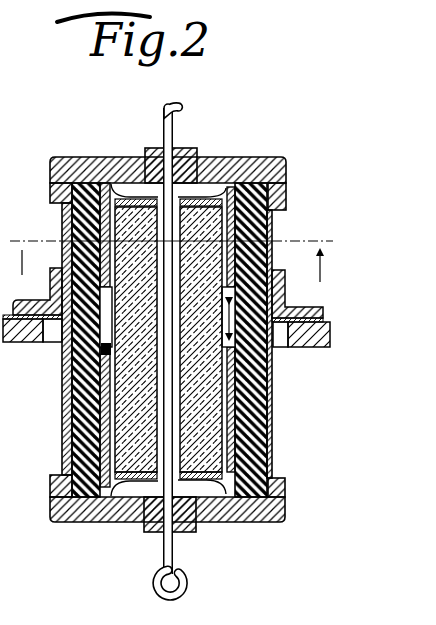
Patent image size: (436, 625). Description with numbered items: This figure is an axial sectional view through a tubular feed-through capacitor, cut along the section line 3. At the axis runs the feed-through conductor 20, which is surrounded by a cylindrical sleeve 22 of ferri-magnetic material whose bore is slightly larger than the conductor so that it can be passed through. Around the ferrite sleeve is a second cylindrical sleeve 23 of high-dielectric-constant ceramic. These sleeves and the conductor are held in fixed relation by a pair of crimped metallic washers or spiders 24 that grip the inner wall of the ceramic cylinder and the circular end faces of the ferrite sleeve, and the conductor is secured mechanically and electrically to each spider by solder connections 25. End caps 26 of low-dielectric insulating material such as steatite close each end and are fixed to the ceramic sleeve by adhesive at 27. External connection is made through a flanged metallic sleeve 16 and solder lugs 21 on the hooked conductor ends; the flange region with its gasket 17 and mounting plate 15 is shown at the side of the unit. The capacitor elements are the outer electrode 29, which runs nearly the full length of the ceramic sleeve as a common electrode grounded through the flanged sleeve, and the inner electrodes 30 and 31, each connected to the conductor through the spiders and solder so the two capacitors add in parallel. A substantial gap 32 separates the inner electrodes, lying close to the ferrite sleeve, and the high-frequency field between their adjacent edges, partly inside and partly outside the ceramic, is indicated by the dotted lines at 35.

The mounting plate 15 is at (331, 348).
The flanged metallic sleeve 16 is at (313, 291).
The gasket 17 is at (326, 319).
The feed-through conductor 20 is at (172, 145).
The solder lugs 21 is at (186, 95).
The cylindrical sleeve of ferri-magnetic material 22 is at (203, 405).
The ceramic cylindrical sleeve 23 is at (62, 222).
The crimped metallic washers or spiders 24 is at (224, 158).
The solder connections 25 is at (134, 183).
The end caps 26 is at (95, 156).
The adhesive fixing 27 is at (286, 190).
The outer electrode 29 is at (62, 413).
The inner electrode 30 is at (228, 446).
The inner electrode 31 is at (259, 158).
The gap 32 is at (273, 361).
The electrical field 35 is at (110, 363).
The section line 3 is at (171, 249).